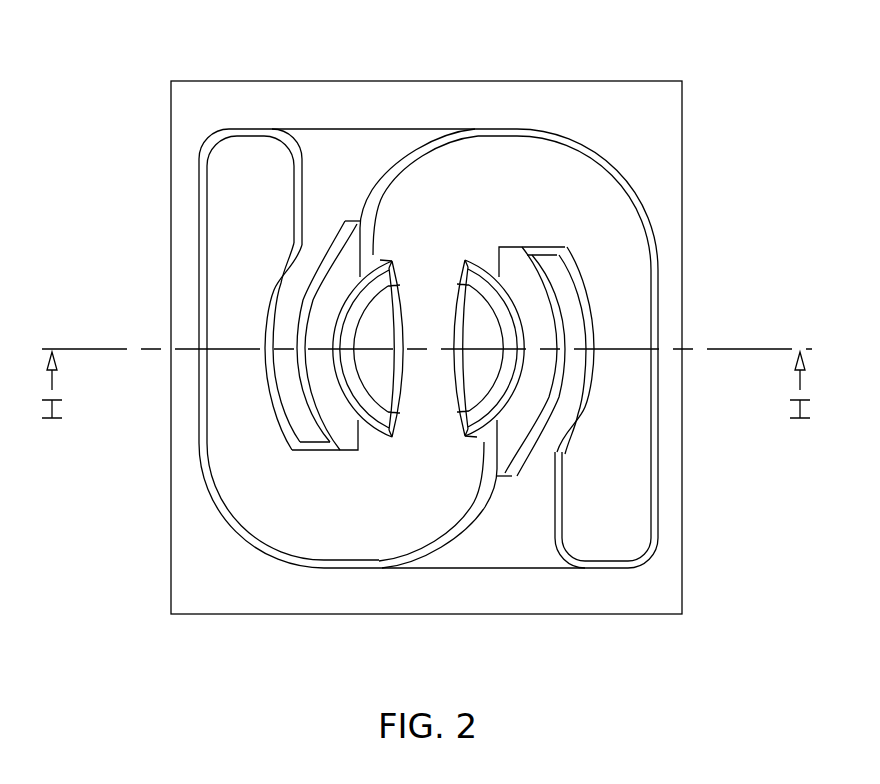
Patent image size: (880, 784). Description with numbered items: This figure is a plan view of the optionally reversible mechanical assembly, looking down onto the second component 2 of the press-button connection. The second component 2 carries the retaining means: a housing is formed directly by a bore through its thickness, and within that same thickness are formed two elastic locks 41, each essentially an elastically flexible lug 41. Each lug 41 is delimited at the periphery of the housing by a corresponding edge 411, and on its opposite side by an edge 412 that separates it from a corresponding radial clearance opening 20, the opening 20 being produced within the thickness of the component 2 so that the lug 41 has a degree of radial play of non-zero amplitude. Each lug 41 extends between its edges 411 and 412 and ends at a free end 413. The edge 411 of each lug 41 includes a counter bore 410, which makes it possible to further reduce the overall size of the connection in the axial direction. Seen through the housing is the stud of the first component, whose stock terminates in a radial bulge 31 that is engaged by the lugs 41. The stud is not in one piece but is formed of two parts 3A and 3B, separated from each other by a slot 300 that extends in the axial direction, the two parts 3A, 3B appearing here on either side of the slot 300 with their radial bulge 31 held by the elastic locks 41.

The second component 2 is at (698, 130).
The slot 300 is at (430, 300).
The radial clearance opening 20 is at (232, 318).
The elastic lock 41 is at (429, 351).
The counter bore 410 is at (325, 397).
The edge 411 is at (360, 257).
The edge 412 is at (275, 281).
The free end 413 is at (540, 246).
The radial bulge 31 is at (327, 360).
The first part of the stud 3A is at (376, 247).
The second part of the stud 3B is at (476, 247).